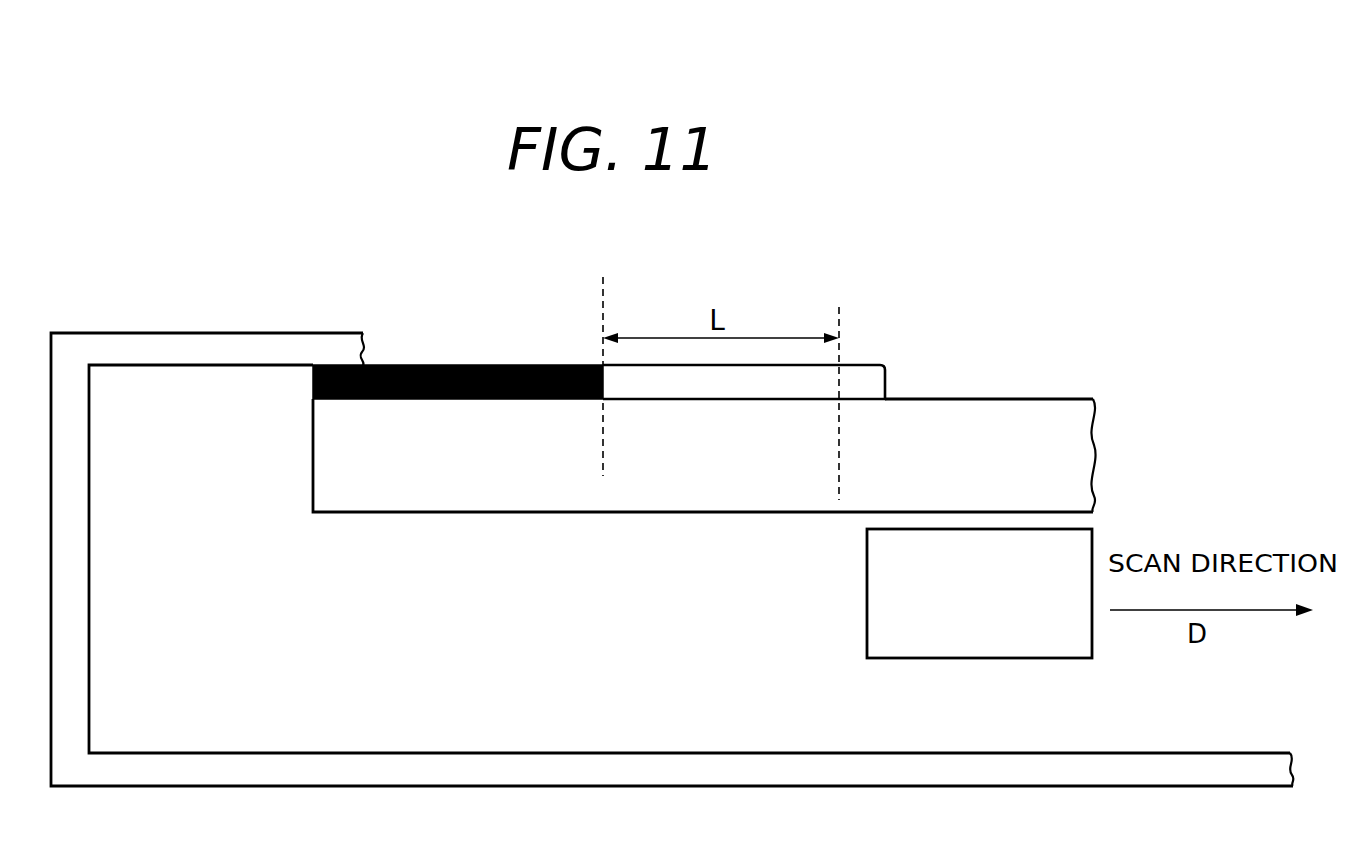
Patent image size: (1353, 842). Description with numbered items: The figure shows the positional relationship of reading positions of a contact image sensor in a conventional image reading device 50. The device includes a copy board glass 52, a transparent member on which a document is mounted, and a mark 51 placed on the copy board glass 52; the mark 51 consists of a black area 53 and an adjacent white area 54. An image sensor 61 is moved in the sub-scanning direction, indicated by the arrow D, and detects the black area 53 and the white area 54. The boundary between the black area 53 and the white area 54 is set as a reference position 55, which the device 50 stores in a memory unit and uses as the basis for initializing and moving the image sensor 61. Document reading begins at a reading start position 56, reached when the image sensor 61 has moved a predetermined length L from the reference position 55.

The image reading device 50 is at (274, 304).
The mark 51 is at (713, 568).
The copy board glass 52 is at (364, 489).
The black area 53 is at (451, 400).
The white area 54 is at (696, 400).
The reference position 55 is at (603, 280).
The reading start position 56 is at (843, 318).
The image sensor 61 is at (1003, 659).